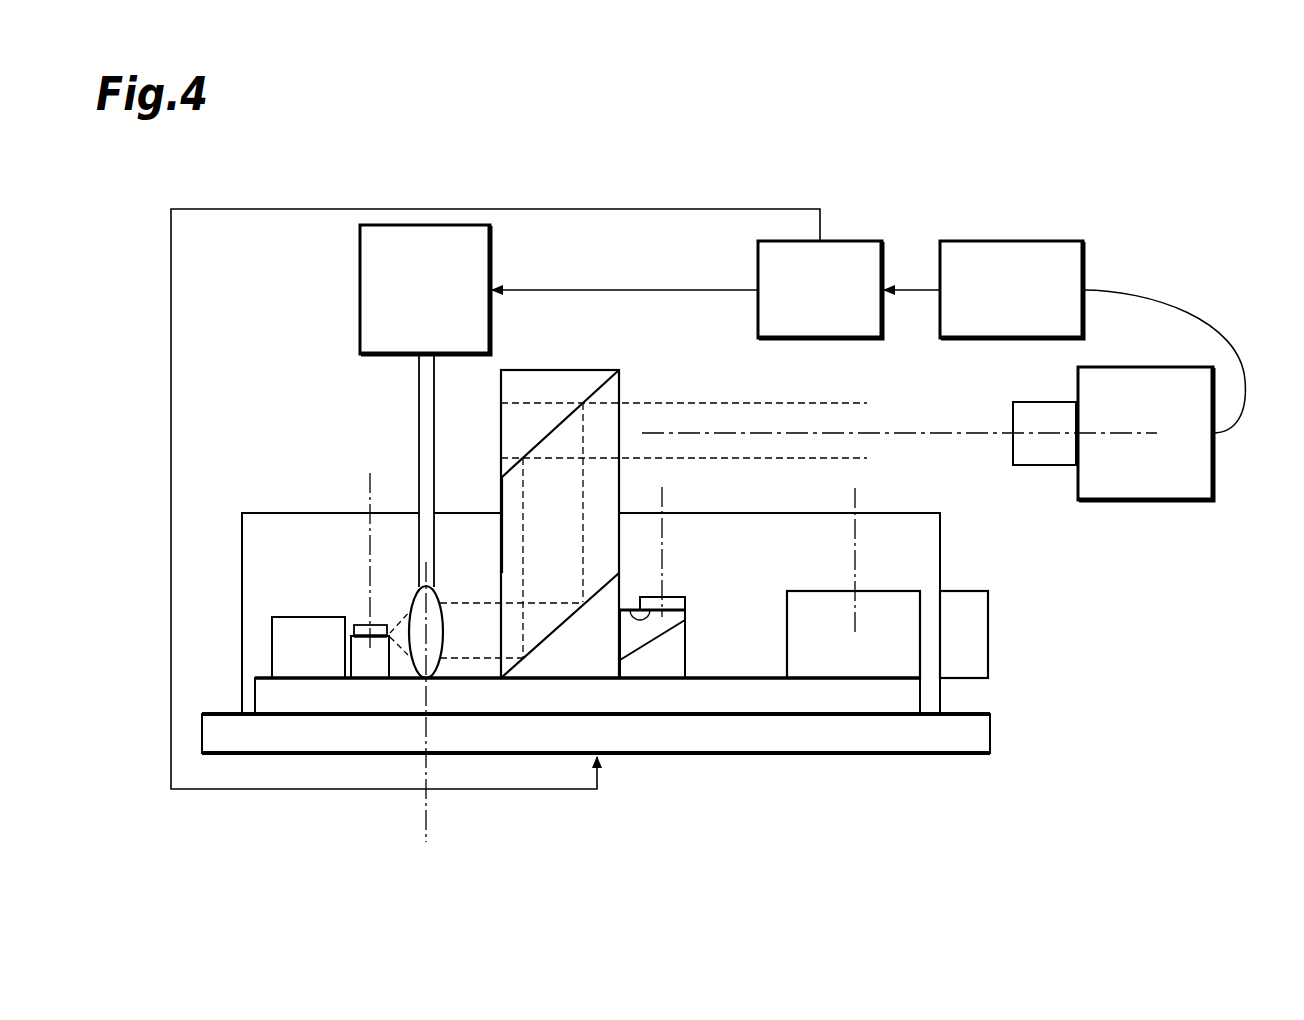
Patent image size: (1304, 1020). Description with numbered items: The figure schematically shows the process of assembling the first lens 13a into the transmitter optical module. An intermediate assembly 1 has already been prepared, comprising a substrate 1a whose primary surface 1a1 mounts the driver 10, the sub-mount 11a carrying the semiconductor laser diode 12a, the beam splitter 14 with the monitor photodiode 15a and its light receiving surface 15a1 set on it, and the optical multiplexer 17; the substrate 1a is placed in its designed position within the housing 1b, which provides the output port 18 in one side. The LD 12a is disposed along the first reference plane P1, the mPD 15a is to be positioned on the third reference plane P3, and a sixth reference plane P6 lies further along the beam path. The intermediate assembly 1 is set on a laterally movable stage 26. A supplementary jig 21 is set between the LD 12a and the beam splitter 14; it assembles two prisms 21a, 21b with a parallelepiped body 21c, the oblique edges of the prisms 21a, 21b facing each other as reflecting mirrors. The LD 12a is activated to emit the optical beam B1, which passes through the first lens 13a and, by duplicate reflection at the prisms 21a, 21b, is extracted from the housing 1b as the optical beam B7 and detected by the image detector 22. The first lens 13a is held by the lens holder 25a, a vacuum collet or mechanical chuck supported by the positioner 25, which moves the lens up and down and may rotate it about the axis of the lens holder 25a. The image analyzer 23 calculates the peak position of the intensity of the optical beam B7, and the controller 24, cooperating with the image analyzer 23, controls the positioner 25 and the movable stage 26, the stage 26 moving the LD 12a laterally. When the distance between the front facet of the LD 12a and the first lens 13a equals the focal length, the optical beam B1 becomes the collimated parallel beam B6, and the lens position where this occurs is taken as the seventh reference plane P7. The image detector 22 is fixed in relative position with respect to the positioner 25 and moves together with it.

The intermediate assembly 1 is at (1016, 550).
The substrate 1a is at (587, 739).
The surface 1a1 is at (727, 677).
The housing 1b is at (941, 530).
The driver 10 is at (312, 616).
The sub-mount 11a is at (365, 665).
The semiconductor laser diode 12a is at (380, 624).
The first lens 13a is at (440, 598).
The beam splitter 14 is at (686, 637).
The monitor photodiode 15a is at (680, 597).
The light receiving surface 15a1 is at (633, 607).
The optical multiplexer 17 is at (887, 590).
The output port 18 is at (989, 633).
The supplementary jig 21 is at (533, 491).
The prism 21a is at (560, 630).
The prism 21b is at (550, 430).
The parallelepiped body 21c is at (514, 512).
The image detector 22 is at (1213, 467).
The image analyzer 23 is at (1014, 240).
The controller 24 is at (857, 240).
The positioner 25 is at (492, 252).
The lens holder 25a is at (418, 414).
The movable stage 26 is at (238, 744).
The optical beam B1 is at (395, 640).
The parallel beam B6 is at (470, 658).
The optical beam B7 is at (701, 402).
The first reference plane P1 is at (369, 486).
The third reference plane P3 is at (664, 500).
The sixth reference plane P6 is at (857, 498).
The seventh reference plane P7 is at (428, 828).